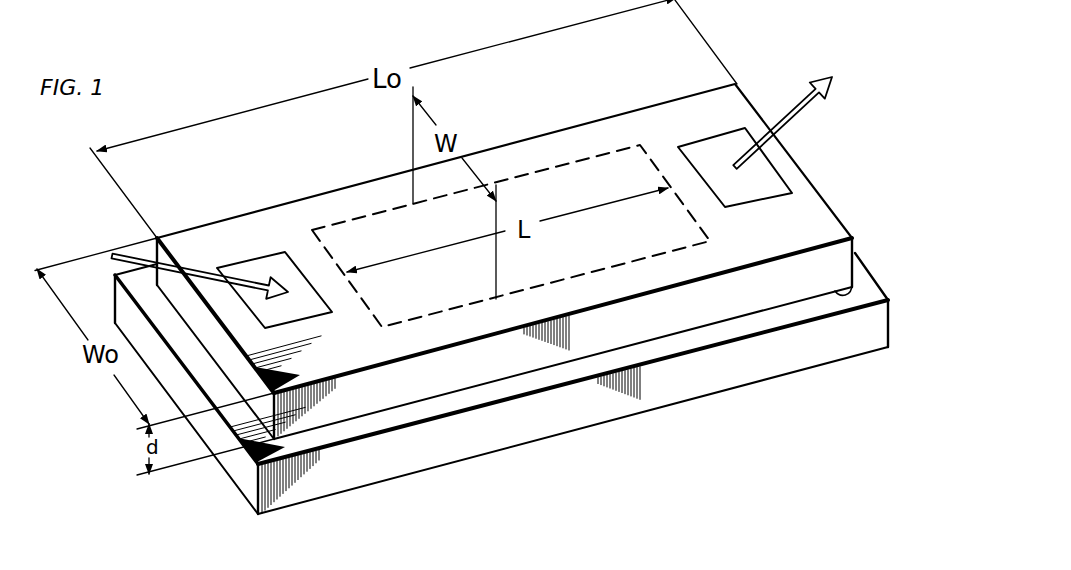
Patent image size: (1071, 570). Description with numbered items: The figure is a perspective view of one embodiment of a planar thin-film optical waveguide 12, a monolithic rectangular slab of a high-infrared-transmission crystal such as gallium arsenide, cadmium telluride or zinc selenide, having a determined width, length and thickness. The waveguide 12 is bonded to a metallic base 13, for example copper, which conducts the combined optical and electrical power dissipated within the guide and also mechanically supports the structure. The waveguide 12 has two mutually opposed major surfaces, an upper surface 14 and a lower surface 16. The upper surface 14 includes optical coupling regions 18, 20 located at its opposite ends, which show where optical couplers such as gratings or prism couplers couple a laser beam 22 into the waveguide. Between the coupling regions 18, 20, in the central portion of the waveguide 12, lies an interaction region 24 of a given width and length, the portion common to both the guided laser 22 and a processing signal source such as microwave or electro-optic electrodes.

The waveguide 12 is at (529, 231).
The metallic base 13 is at (673, 392).
The upper surface 14 is at (510, 155).
The lower surface 16 is at (845, 292).
The optical coupling region 18 is at (262, 265).
The optical coupling region 20 is at (770, 182).
The laser beam 22 is at (133, 258).
The interaction region 24 is at (583, 172).